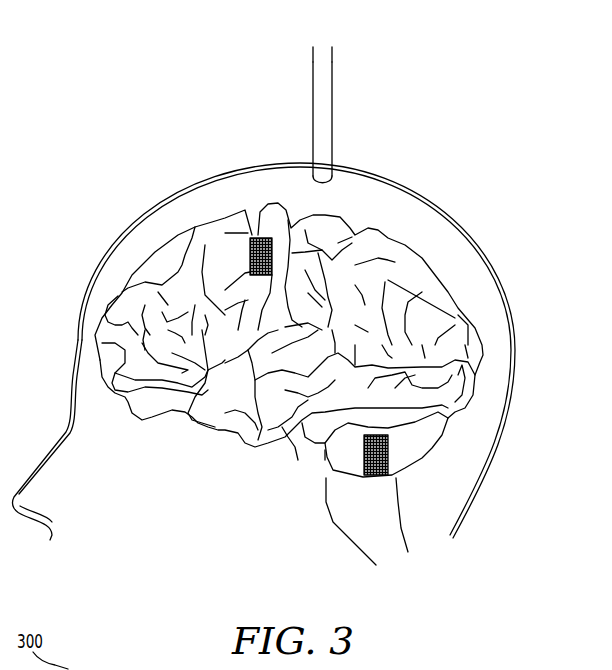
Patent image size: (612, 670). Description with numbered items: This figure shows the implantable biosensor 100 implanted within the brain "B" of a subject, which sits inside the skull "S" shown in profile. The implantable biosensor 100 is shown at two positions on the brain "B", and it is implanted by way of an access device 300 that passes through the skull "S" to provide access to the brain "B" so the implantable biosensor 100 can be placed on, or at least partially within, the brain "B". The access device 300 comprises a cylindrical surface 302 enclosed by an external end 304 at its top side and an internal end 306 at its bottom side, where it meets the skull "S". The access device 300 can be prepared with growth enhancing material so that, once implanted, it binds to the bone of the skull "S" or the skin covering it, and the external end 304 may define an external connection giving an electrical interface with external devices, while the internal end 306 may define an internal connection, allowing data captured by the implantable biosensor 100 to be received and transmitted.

The implantable biosensor 100 is at (249, 241).
The access device 300 is at (328, 99).
The cylindrical surface 302 is at (322, 137).
The external end 304 is at (322, 56).
The internal end 306 is at (327, 181).
The skull S is at (97, 250).
The brain B is at (98, 340).